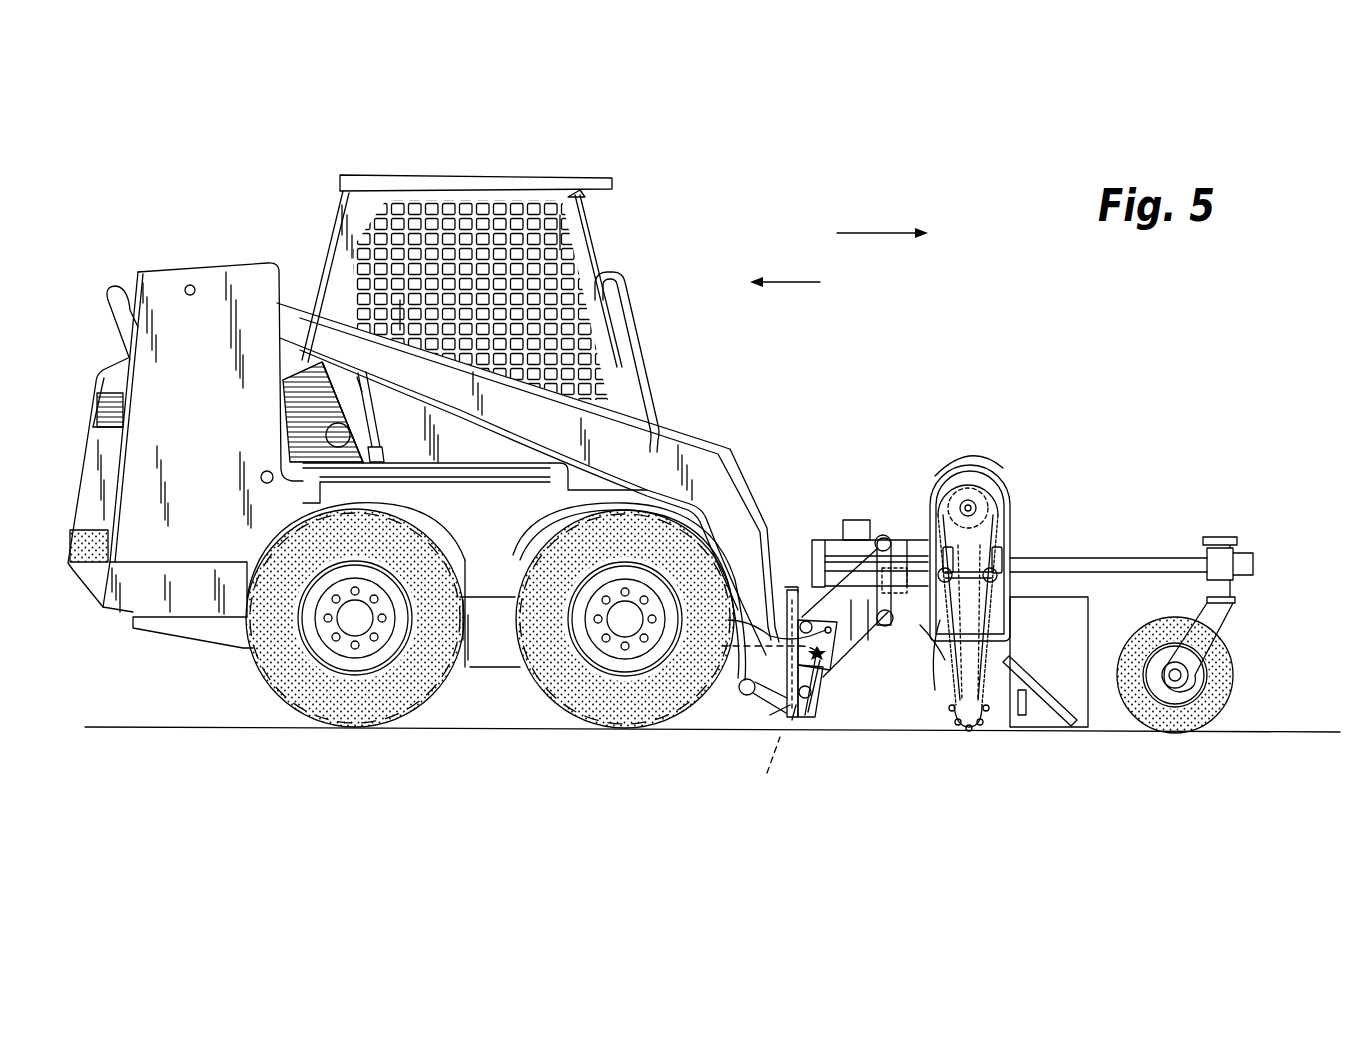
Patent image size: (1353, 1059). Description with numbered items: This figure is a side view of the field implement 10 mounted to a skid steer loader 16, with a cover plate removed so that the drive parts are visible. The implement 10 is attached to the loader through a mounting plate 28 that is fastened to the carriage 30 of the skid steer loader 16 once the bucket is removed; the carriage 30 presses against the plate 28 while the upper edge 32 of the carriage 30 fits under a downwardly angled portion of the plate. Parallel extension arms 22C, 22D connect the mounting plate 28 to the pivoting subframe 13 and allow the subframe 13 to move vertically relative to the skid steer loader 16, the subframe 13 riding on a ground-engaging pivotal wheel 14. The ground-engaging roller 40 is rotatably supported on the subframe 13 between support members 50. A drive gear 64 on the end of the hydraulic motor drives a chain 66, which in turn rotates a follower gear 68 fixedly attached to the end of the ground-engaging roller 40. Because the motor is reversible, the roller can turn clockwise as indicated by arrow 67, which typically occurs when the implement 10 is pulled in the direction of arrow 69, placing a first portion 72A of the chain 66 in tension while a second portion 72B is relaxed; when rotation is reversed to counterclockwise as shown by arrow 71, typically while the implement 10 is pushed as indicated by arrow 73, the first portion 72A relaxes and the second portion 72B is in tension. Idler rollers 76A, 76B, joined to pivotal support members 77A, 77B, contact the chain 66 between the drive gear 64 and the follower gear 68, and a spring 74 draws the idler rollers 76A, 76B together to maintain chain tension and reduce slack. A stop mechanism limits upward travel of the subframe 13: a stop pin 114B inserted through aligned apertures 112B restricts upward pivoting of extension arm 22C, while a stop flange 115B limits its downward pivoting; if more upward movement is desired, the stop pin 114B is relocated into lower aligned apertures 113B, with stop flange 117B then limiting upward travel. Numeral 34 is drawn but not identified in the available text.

The field implement 10 is at (1038, 467).
The pivoting subframe 13 is at (1245, 731).
The ground-engaging pivotal wheel 14 is at (1228, 646).
The skid steer loader 16 is at (641, 258).
The extension arm 22C is at (851, 605).
The extension arm 22D is at (868, 650).
The mounting plate 28 is at (777, 717).
The carriage 30 is at (775, 690).
The upper edge 32 is at (786, 587).
The lower mounting bracket 34 is at (803, 585).
The ground-engaging roller 40 is at (958, 735).
The support member 50 is at (935, 685).
The drive gear 64 is at (986, 498).
The chain 66 is at (970, 498).
The arrow 67 is at (1000, 458).
The follower gear 68 is at (988, 726).
The arrow 69 is at (785, 282).
The arrow 71 is at (937, 470).
The first portion of the chain 72A is at (905, 640).
The second portion of the chain 72B is at (1000, 628).
The arrow 73 is at (860, 233).
The spring 74 is at (988, 566).
The idler roller 76A is at (848, 630).
The idler roller 76B is at (1003, 584).
The pivotal support member 77A is at (947, 547).
The pivotal support member 77B is at (1002, 540).
The aligned apertures 112B is at (755, 625).
The lower aligned apertures 113B is at (773, 713).
The stop pin 114B is at (792, 720).
The stop flange 115B is at (753, 650).
The stop flange 117B is at (771, 773).